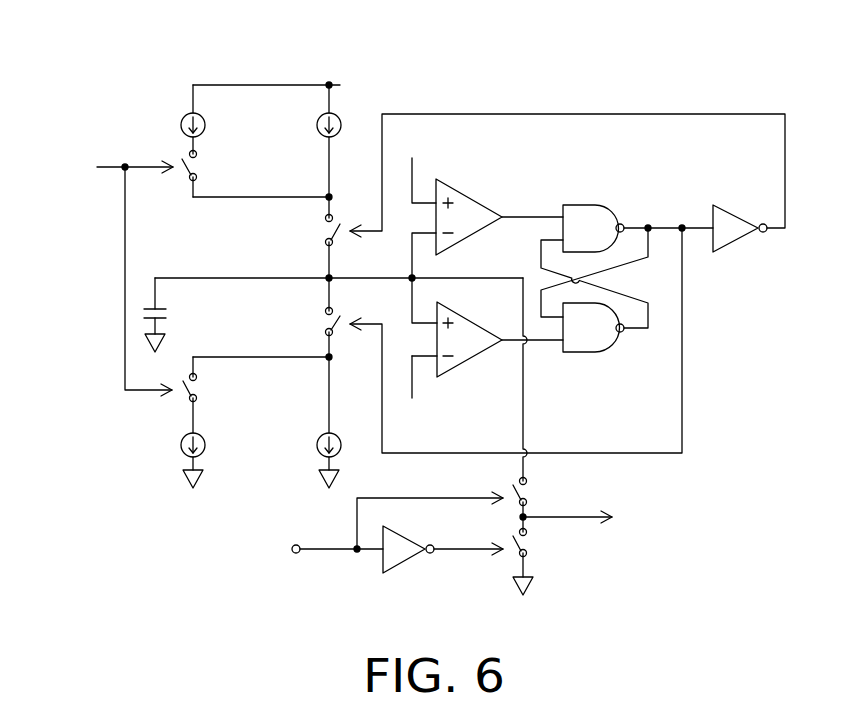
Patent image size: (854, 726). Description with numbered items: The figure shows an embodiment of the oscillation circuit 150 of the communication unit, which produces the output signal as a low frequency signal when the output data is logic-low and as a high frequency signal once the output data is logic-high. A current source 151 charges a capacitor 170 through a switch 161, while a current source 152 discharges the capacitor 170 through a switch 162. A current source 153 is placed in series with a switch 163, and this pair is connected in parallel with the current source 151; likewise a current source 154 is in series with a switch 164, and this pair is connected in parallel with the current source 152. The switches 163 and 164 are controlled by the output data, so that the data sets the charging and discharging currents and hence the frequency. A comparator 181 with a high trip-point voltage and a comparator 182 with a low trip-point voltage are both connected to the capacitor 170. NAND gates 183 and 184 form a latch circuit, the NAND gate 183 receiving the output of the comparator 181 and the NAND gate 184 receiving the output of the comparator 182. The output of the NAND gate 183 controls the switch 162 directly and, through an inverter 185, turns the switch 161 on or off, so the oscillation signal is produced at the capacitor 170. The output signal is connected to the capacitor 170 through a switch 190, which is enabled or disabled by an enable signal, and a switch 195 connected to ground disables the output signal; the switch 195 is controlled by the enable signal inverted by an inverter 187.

The oscillation circuit 150 is at (762, 52).
The current source 151 is at (317, 131).
The current source 152 is at (317, 453).
The current source 153 is at (181, 131).
The current source 154 is at (181, 453).
The switch 161 is at (326, 234).
The switch 162 is at (328, 320).
The switch 163 is at (198, 166).
The switch 164 is at (198, 390).
The capacitor 170 is at (170, 306).
The comparator 181 is at (471, 197).
The comparator 182 is at (470, 362).
The NAND gate 183 is at (578, 203).
The NAND gate 184 is at (578, 354).
The inverter 185 is at (740, 207).
The inverter 187 is at (405, 563).
The switch 190 is at (531, 490).
The switch 195 is at (531, 542).